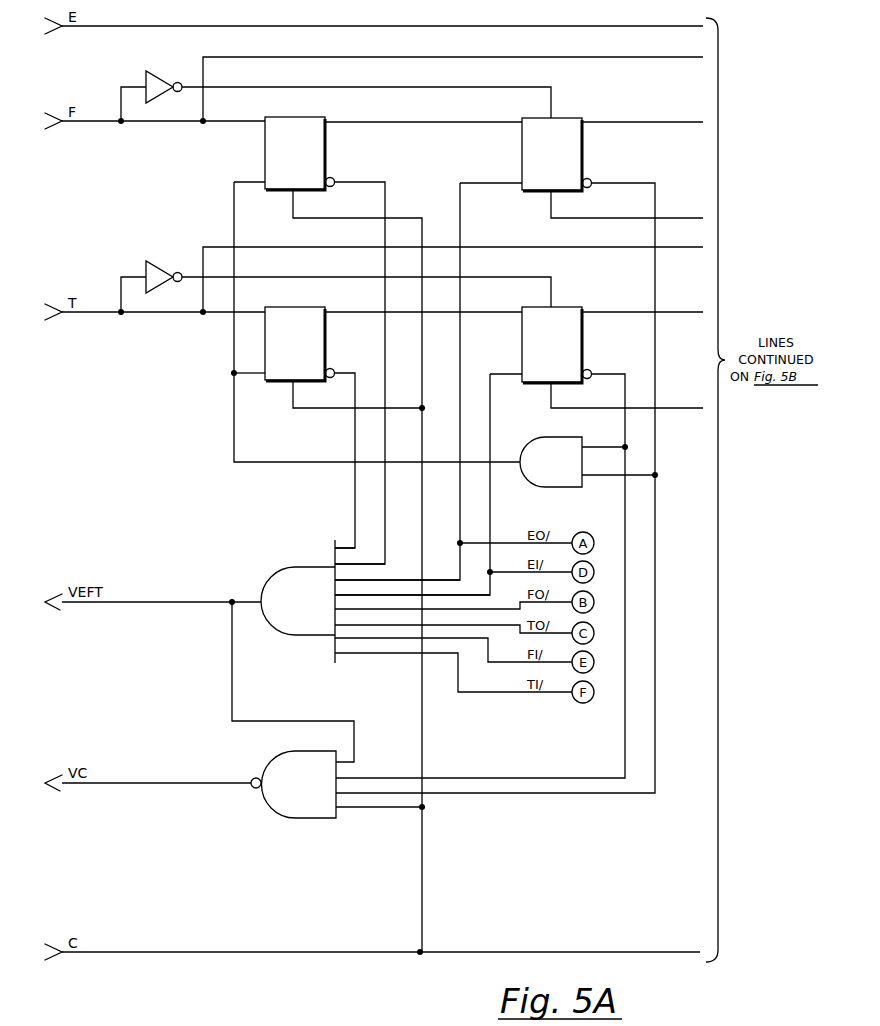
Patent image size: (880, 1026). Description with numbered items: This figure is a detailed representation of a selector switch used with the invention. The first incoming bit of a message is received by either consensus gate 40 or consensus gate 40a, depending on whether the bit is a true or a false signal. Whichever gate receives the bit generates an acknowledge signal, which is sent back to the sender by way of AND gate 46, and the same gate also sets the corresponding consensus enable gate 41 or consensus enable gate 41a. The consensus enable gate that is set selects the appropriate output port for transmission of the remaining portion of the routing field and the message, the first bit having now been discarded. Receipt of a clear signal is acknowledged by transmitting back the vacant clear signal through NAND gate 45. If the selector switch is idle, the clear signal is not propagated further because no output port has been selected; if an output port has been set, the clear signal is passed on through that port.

The consensus gate 40 is at (327, 153).
The consensus gate 40a is at (327, 343).
The consensus enable gate 41 is at (584, 155).
The consensus enable gate 41a is at (584, 345).
The NAND gate 45 is at (272, 738).
The AND gate 46 is at (272, 552).